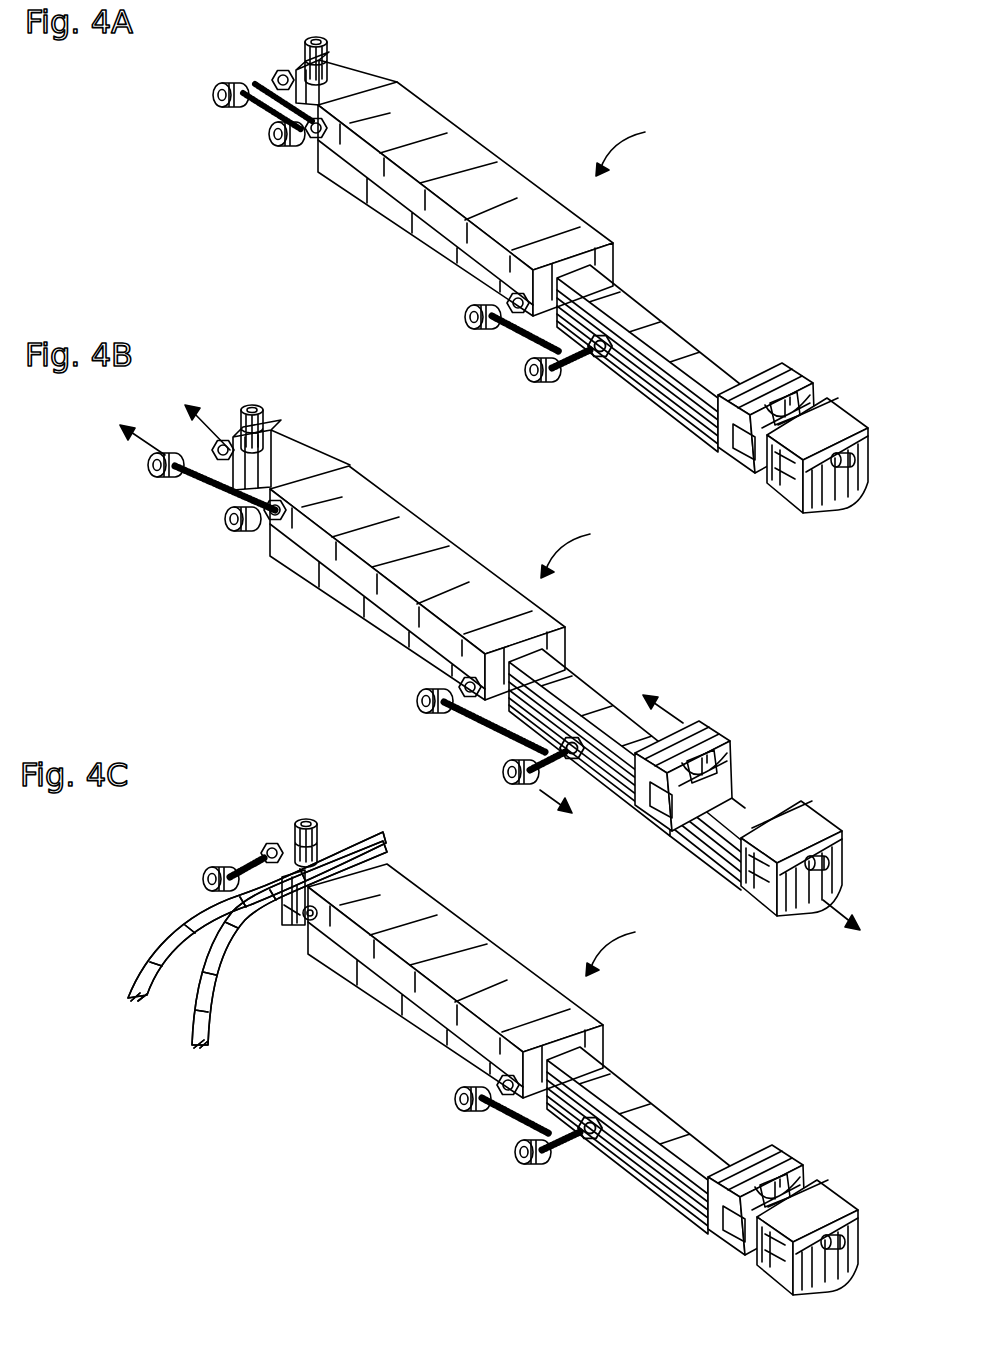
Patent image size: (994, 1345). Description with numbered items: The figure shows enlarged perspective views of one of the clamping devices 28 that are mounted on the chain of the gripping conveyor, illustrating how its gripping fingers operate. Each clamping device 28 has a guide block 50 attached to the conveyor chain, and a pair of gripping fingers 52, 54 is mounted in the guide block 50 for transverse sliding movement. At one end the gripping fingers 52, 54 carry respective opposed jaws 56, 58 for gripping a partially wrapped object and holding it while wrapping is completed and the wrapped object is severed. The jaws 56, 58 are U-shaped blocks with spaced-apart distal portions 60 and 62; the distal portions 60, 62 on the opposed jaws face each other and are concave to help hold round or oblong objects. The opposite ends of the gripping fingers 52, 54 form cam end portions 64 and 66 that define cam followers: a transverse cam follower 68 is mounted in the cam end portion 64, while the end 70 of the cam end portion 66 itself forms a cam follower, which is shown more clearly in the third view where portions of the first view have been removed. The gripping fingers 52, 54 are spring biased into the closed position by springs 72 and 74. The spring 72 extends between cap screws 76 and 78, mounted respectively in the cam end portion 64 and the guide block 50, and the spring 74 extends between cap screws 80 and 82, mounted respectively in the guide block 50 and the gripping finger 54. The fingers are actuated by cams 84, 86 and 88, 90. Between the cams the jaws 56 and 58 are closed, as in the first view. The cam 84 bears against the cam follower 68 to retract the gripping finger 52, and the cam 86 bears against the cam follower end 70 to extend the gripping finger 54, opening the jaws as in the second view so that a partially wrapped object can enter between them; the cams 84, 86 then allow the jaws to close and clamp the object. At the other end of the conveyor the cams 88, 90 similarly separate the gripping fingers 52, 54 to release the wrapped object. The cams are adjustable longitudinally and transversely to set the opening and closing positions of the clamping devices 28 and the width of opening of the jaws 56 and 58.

In FIG. 4A, the clamping device 28 is at (638, 150).
In FIG. 4B, the clamping device 28 is at (584, 552).
In FIG. 4C, the clamping device 28 is at (624, 953).
In FIG. 4A, the guide block 50 is at (463, 148).
In FIG. 4B, the guide block 50 is at (385, 505).
In FIG. 4C, the guide block 50 is at (448, 930).
In FIG. 4A, the gripping finger 52 is at (623, 303).
In FIG. 4B, the gripping finger 52 is at (577, 690).
In FIG. 4C, the gripping finger 52 is at (635, 1100).
In FIG. 4A, the gripping finger 54 is at (665, 397).
In FIG. 4B, the gripping finger 54 is at (640, 795).
In FIG. 4C, the gripping finger 54 is at (670, 1195).
In FIG. 4A, the jaw 56 is at (790, 372).
In FIG. 4B, the jaw 56 is at (715, 725).
In FIG. 4C, the jaw 56 is at (780, 1165).
In FIG. 4A, the jaw 58 is at (860, 420).
In FIG. 4B, the jaw 58 is at (820, 822).
In FIG. 4C, the jaw 58 is at (825, 1205).
In FIG. 4A, the distal portion 60 is at (815, 408).
In FIG. 4B, the distal portion 60 is at (728, 760).
In FIG. 4C, the distal portion 60 is at (833, 1242).
In FIG. 4A, the distal portion 62 is at (838, 425).
In FIG. 4B, the distal portion 62 is at (777, 890).
In FIG. 4C, the distal portion 62 is at (775, 1190).
In FIG. 4A, the cam end portion 64 is at (348, 86).
In FIG. 4B, the cam end portion 64 is at (288, 452).
In FIG. 4C, the cam end portion 64 is at (322, 872).
In FIG. 4A, the cam end portion 66 is at (290, 142).
In FIG. 4B, the cam end portion 66 is at (272, 524).
In FIG. 4C, the cam end portion 66 is at (288, 918).
In FIG. 4A, the transverse cam follower 68 is at (325, 66).
In FIG. 4B, the transverse cam follower 68 is at (270, 428).
In FIG. 4C, the transverse cam follower 68 is at (298, 835).
In FIG. 4C, the cam follower end 70 is at (290, 905).
In FIG. 4A, the spring 72 is at (262, 116).
In FIG. 4B, the spring 72 is at (215, 492).
In FIG. 4C, the spring 72 is at (250, 862).
In FIG. 4A, the spring 74 is at (516, 343).
In FIG. 4B, the spring 74 is at (488, 738).
In FIG. 4C, the spring 74 is at (508, 1126).
In FIG. 4A, the cap screw 76 is at (216, 100).
In FIG. 4B, the cap screw 76 is at (152, 472).
In FIG. 4C, the cap screw 76 is at (205, 872).
In FIG. 4A, the cap screw 78 is at (278, 147).
In FIG. 4B, the cap screw 78 is at (236, 532).
In FIG. 4C, the cap screw 78 is at (308, 922).
In FIG. 4A, the cap screw 80 is at (466, 322).
In FIG. 4B, the cap screw 80 is at (418, 706).
In FIG. 4C, the cap screw 80 is at (456, 1104).
In FIG. 4A, the cap screw 82 is at (535, 384).
In FIG. 4B, the cap screw 82 is at (508, 785).
In FIG. 4C, the cap screw 82 is at (522, 1166).
In FIG. 4C, the cam 84 is at (152, 948).
In FIG. 4C, the cam 86 is at (192, 1028).
In FIG. 4C, the cam 88 is at (257, 916).
In FIG. 4C, the cam 90 is at (289, 944).